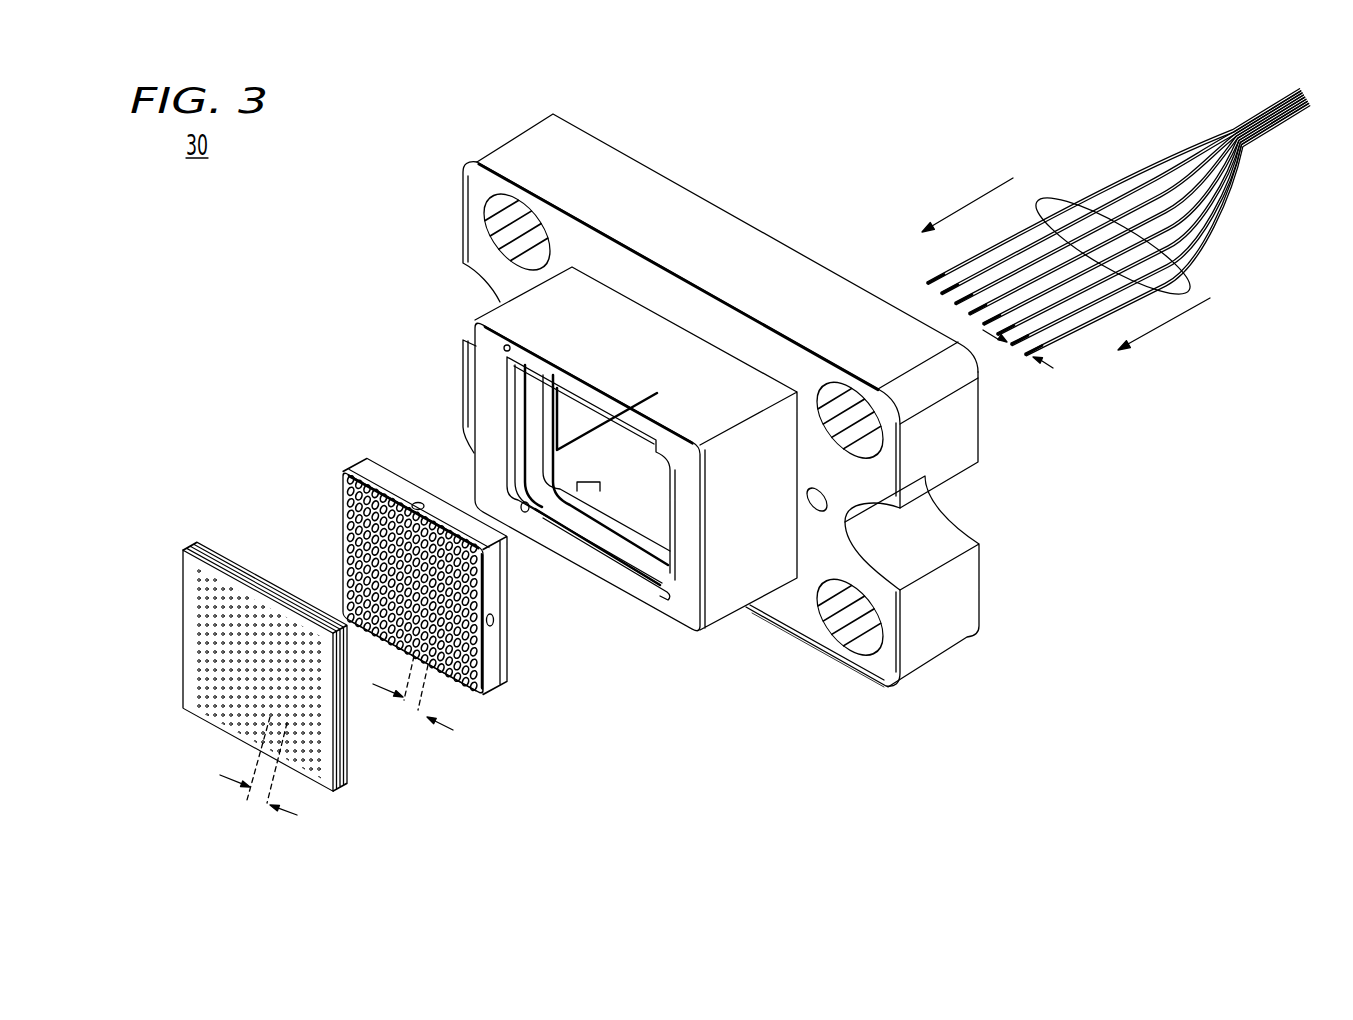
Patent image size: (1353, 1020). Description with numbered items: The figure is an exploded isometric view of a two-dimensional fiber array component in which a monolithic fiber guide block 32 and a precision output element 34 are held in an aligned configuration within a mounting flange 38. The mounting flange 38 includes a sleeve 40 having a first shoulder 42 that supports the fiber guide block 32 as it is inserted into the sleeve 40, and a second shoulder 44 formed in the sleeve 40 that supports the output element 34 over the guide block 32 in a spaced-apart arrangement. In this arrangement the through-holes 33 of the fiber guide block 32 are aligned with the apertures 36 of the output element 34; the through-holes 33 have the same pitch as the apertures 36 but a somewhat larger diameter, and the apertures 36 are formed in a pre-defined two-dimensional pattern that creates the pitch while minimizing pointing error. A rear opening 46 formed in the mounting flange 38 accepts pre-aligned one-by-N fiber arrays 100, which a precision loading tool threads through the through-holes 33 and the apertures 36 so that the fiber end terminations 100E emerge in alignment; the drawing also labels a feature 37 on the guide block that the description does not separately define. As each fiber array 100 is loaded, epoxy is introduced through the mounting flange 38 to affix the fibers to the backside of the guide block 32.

The monolithic fiber guide block 32 is at (440, 580).
The through-holes 33 is at (473, 693).
The precision output element 34 is at (235, 661).
The apertures 36 is at (190, 642).
The holes of hole plate 37 is at (477, 648).
The mounting flange 38 is at (721, 395).
The sleeve 40 is at (717, 597).
The first shoulder 42 is at (599, 450).
The second shoulder 44 is at (510, 461).
The rear opening 46 is at (727, 207).
The 1×N fiber arrays 100 is at (1089, 233).
The fiber ends 100E is at (935, 282).